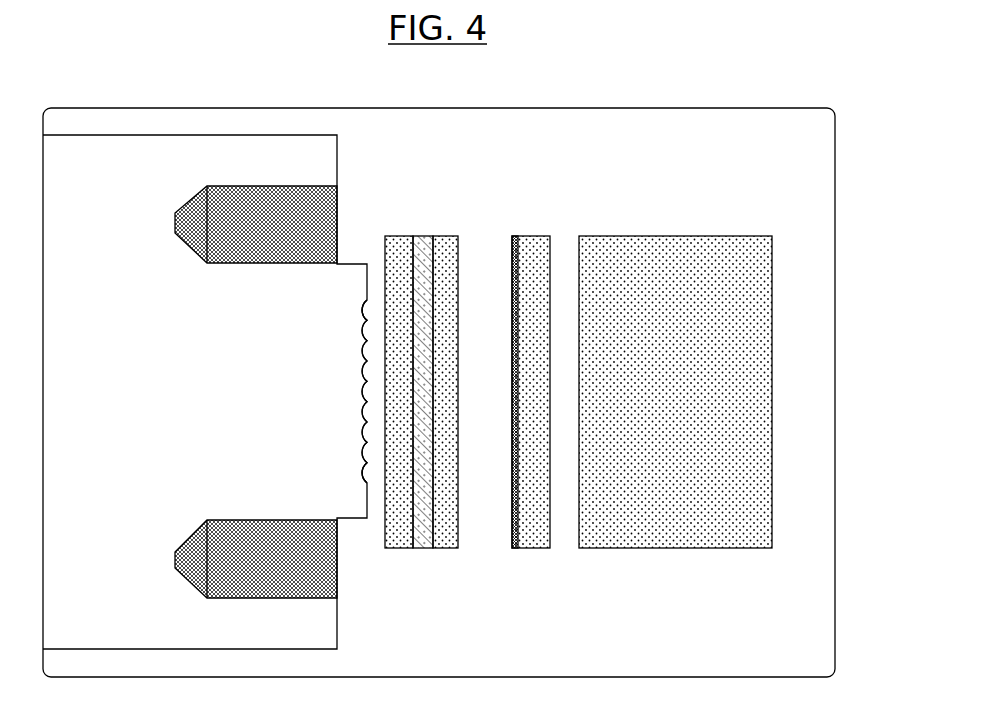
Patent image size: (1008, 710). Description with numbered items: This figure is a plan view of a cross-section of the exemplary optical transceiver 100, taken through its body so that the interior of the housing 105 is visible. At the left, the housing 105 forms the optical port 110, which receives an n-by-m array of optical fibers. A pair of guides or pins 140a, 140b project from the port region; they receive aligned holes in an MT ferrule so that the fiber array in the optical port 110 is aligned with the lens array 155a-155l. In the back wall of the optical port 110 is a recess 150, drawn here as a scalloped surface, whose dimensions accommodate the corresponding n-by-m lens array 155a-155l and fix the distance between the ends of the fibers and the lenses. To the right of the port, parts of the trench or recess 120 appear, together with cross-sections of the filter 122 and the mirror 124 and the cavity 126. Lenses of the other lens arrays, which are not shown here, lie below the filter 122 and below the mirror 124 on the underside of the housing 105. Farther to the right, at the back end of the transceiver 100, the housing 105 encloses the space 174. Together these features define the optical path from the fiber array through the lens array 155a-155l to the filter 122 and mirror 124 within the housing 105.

The transceiver 100 is at (439, 366).
The housing 105 is at (497, 96).
The optical port 110 is at (196, 386).
The trench or recess 120 is at (488, 400).
The filter 122 is at (420, 548).
The mirror 124 is at (512, 548).
The cavity 126 is at (405, 236).
The guide or pin 140a is at (293, 233).
The guide or pin 140b is at (293, 568).
The recess 150 is at (345, 383).
The lens 155a is at (362, 300).
The lens 155l is at (300, 480).
The space 174 is at (677, 236).